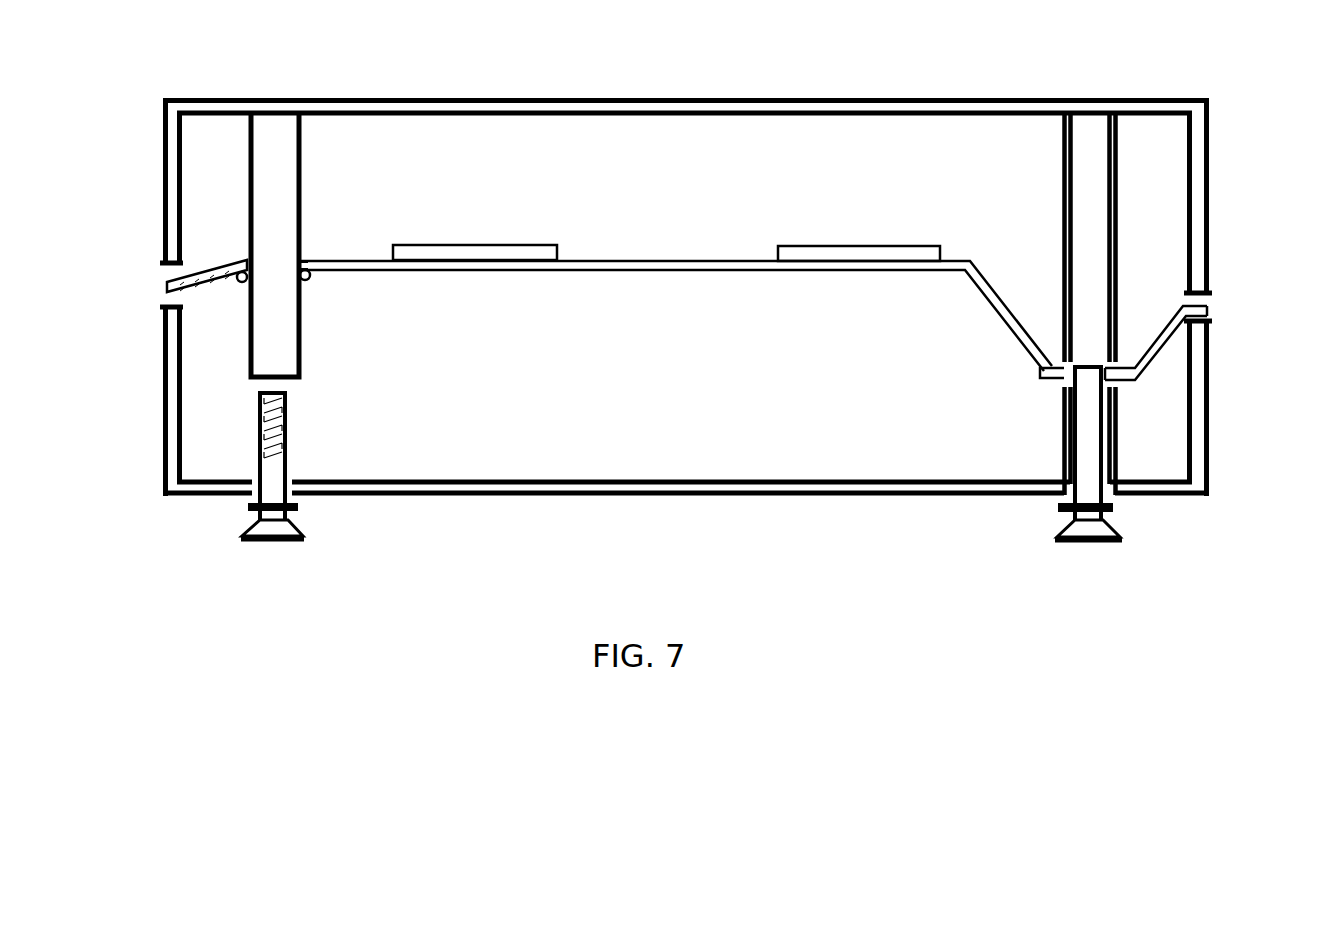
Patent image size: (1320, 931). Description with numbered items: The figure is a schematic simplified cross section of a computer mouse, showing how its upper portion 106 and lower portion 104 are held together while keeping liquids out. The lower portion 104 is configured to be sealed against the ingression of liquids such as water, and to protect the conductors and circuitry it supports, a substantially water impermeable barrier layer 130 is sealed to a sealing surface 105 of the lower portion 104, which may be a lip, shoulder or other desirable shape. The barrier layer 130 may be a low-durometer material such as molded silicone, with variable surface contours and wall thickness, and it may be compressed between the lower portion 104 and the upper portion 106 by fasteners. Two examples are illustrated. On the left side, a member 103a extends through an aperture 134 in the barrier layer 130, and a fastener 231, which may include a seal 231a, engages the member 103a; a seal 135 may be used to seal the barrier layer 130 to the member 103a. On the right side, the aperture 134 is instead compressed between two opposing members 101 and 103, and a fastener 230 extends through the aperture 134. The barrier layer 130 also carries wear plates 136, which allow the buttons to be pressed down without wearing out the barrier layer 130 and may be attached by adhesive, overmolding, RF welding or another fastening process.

The opposing member 101 is at (1115, 417).
The opposing member 103 is at (1115, 197).
The member 103a is at (300, 150).
The lower portion 104 is at (735, 490).
The sealing surface 105 is at (168, 285).
The upper portion 106 is at (883, 98).
The barrier layer 130 is at (735, 258).
The aperture 134 is at (300, 259).
The seal 135 is at (306, 281).
The wear plate 136 is at (512, 245).
The fastener 230 is at (1083, 541).
The fastener 231 is at (260, 541).
The seal 231a is at (298, 507).